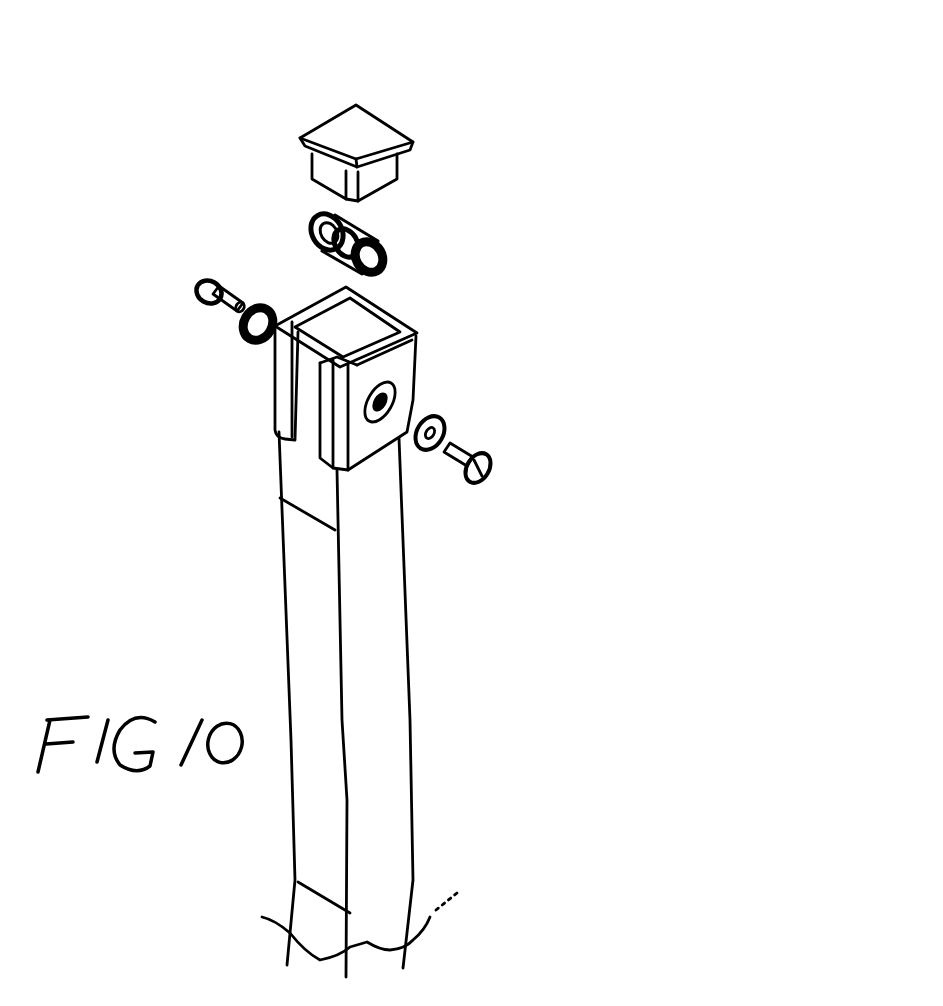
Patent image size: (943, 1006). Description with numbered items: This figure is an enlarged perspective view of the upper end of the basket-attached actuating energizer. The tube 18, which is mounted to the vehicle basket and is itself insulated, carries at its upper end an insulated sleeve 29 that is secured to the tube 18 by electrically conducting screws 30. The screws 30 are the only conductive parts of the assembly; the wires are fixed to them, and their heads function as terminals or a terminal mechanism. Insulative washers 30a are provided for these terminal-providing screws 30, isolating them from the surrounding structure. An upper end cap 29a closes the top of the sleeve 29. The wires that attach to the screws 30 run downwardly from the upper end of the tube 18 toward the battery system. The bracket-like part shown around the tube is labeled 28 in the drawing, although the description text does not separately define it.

The tube 18 is at (322, 565).
The mounting bracket 28 is at (400, 477).
The upper end insulated sleeve 29 is at (418, 360).
The upper end cap 29a is at (340, 131).
The electrically conducting screws 30 is at (472, 445).
The insulative washers 30a is at (437, 418).